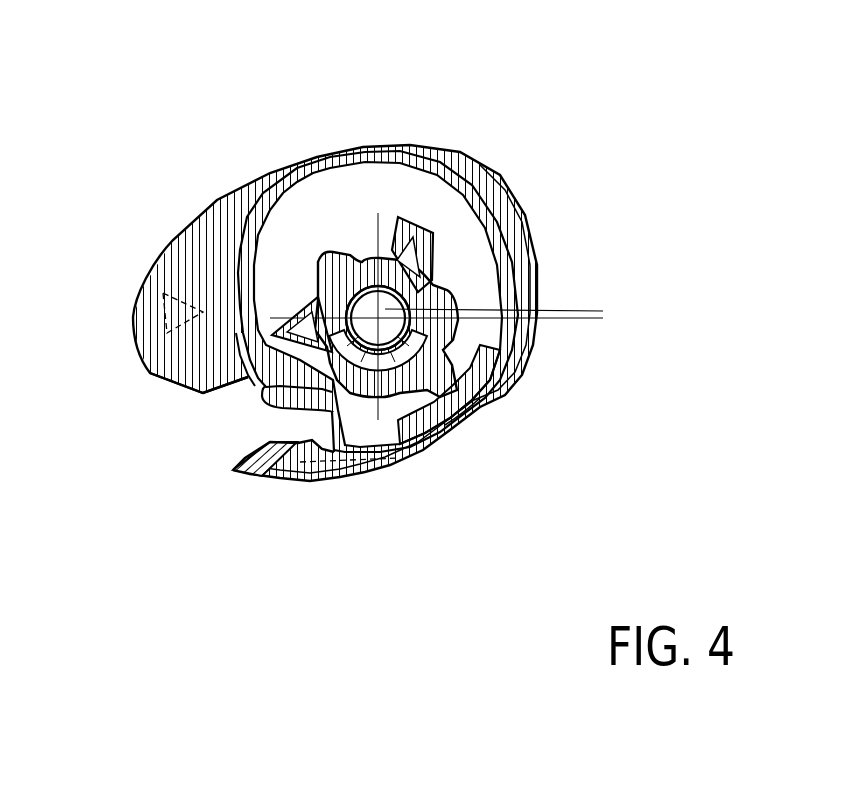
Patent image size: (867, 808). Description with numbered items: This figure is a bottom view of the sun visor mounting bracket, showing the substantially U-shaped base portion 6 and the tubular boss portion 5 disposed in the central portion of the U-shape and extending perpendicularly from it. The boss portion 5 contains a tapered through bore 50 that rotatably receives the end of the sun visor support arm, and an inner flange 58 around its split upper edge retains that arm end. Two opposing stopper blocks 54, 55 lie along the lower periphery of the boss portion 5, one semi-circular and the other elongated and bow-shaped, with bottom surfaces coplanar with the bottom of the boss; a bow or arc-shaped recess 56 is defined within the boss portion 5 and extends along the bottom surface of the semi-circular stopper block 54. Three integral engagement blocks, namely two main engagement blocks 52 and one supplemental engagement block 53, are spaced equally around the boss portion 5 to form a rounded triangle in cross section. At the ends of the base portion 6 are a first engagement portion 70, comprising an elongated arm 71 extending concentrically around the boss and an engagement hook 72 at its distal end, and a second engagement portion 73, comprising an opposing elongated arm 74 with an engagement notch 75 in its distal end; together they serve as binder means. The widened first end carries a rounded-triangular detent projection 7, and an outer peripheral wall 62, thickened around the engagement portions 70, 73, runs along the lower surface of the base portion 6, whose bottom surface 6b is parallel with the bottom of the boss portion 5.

The boss portion 5 is at (430, 265).
The base portion 6 is at (556, 226).
The bottom surface of the base portion 6b is at (518, 207).
The detent projection 7 is at (203, 312).
The through bore 50 is at (360, 333).
The main engagement block 52 is at (285, 305).
The supplemental engagement block 53 is at (468, 420).
The stopper block 54 is at (445, 326).
The stopper block 55 is at (333, 287).
The arc-shaped recess 56 is at (490, 385).
The inner flange 58 is at (350, 430).
The outer peripheral wall 62 is at (497, 190).
The first engagement portion 70 is at (232, 402).
The elongated arm 71 is at (268, 343).
The engagement hook 72 is at (267, 398).
The second engagement portion 73 is at (300, 499).
The elongated arm 74 is at (338, 472).
The engagement notch 75 is at (298, 466).